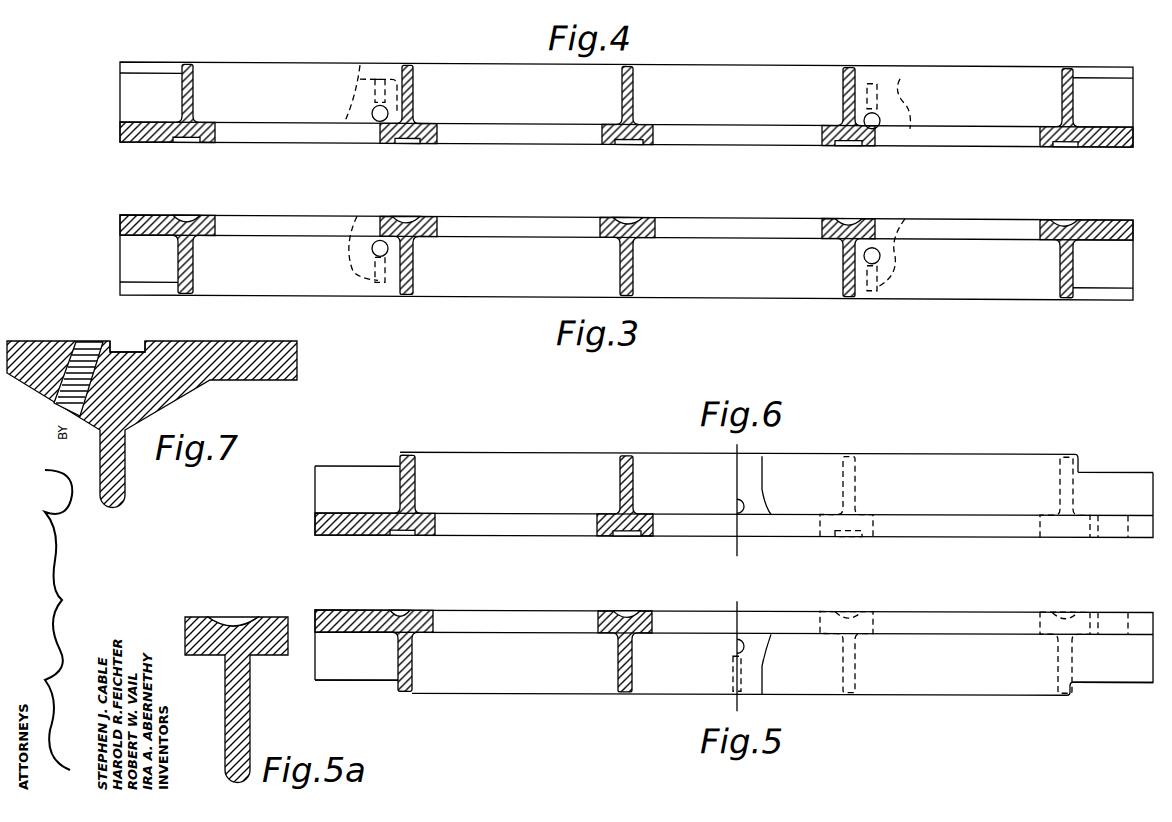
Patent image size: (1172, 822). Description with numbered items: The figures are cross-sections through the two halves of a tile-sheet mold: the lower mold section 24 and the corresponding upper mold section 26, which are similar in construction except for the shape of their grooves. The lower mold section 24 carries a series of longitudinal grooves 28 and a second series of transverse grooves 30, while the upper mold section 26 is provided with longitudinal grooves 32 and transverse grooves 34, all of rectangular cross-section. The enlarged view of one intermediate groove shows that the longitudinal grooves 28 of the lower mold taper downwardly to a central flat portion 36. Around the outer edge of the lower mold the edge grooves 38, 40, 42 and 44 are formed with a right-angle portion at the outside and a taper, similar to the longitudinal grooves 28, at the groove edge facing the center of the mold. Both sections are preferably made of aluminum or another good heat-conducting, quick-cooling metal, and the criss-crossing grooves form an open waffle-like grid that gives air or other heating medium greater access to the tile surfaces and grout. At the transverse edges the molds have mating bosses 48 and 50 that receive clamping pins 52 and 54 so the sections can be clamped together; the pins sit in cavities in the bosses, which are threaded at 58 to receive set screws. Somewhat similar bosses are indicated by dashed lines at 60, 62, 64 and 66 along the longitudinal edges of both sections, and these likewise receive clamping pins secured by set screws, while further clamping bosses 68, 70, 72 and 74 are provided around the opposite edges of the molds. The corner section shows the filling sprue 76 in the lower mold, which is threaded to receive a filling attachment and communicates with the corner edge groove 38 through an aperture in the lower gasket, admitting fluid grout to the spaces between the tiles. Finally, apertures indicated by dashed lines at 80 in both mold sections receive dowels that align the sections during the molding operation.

In FIG. 3, the lower mold section 24 is at (968, 298).
In FIG. 7, the lower mold section 24 is at (252, 380).
In FIG. 5, the lower mold section 24 is at (525, 695).
In FIG. 4, the upper mold section 26 is at (277, 68).
In FIG. 6, the upper mold section 26 is at (520, 456).
In FIG. 5A, the longitudinal grooves 28 is at (245, 625).
In FIG. 5, the longitudinal grooves 28 is at (625, 612).
In FIG. 3, the transverse grooves 30 is at (637, 220).
In FIG. 6, the longitudinal grooves 32 is at (628, 537).
In FIG. 4, the transverse grooves 34 is at (408, 141).
In FIG. 5A, the central flat portion 36 is at (232, 625).
In FIG. 3, the edge groove 38 is at (185, 215).
In FIG. 7, the edge groove 38 is at (128, 343).
In FIG. 3, the edge groove 40 is at (1068, 222).
In FIG. 5, the edge groove 42 is at (403, 612).
In FIG. 5, the edge groove 44 is at (1065, 614).
In FIG. 4, the mating boss 48 is at (1092, 90).
In FIG. 6, the mating boss 48 is at (765, 488).
In FIG. 3, the mating boss 50 is at (1105, 253).
In FIG. 5, the mating boss 50 is at (768, 650).
In FIG. 6, the clamping pin 52 is at (748, 506).
In FIG. 5, the clamping pin 54 is at (745, 638).
In FIG. 6, the threaded portion 58 is at (735, 471).
In FIG. 5, the threaded portion 58 is at (735, 672).
In FIG. 4, the boss 60 is at (357, 63).
In FIG. 4, the boss 62 is at (905, 72).
In FIG. 6, the boss 62 is at (1100, 478).
In FIG. 3, the boss 64 is at (356, 215).
In FIG. 3, the boss 66 is at (905, 215).
In FIG. 5, the boss 66 is at (1100, 670).
In FIG. 4, the clamping boss 68 is at (128, 92).
In FIG. 3, the clamping boss 70 is at (125, 253).
In FIG. 6, the clamping boss 72 is at (345, 475).
In FIG. 5, the clamping boss 74 is at (365, 665).
In FIG. 7, the filling sprue 76 is at (73, 355).
In FIG. 6, the apertures 80 is at (348, 538).
In FIG. 5, the apertures 80 is at (352, 612).